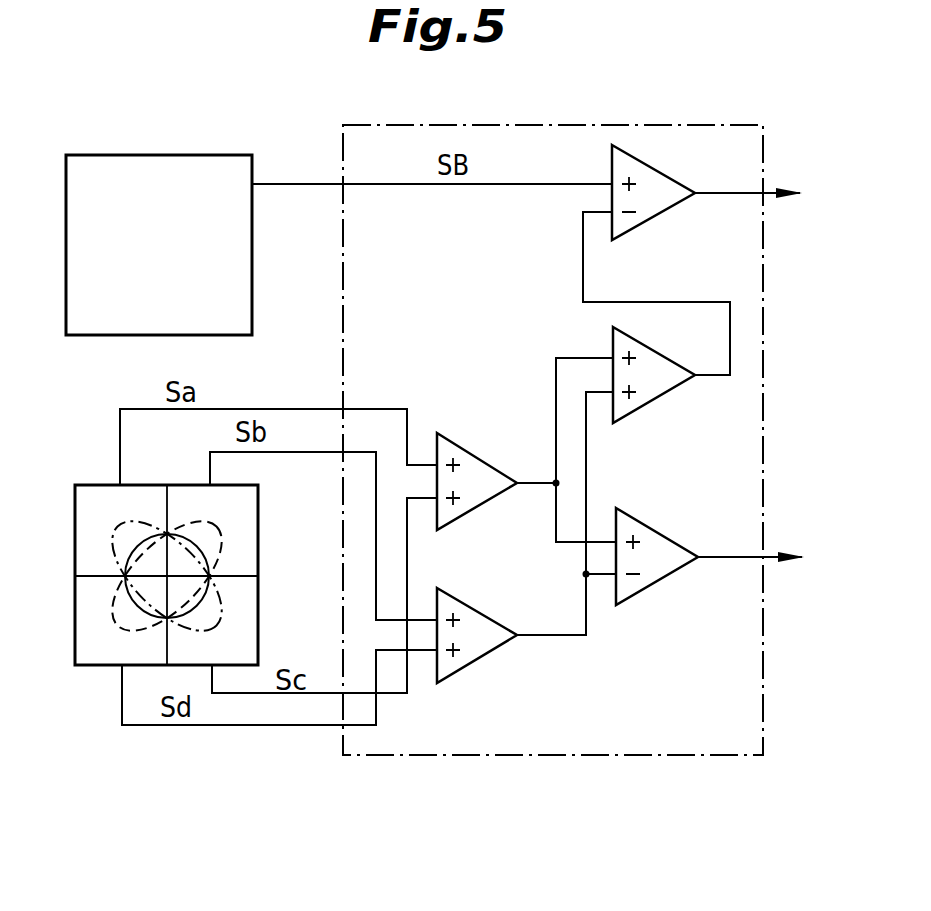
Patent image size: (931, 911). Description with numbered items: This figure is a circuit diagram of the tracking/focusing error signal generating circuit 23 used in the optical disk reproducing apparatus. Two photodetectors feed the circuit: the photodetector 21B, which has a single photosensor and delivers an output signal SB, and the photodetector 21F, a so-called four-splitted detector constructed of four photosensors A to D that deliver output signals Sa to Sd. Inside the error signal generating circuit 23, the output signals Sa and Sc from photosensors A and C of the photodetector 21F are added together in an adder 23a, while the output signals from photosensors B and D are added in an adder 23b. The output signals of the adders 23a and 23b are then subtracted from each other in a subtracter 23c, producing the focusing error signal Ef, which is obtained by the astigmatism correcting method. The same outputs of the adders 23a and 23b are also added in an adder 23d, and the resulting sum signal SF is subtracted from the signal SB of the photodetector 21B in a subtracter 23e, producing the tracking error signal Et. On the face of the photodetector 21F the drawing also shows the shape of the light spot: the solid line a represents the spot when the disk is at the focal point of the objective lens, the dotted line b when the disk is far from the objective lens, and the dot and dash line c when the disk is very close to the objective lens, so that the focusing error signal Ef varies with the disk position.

The photodetector 21B is at (170, 160).
The photodetector 21F is at (159, 639).
The tracking/focusing error signal generating circuit 23 is at (400, 755).
The adder 23a is at (485, 507).
The adder 23b is at (491, 657).
The subtracter 23c is at (673, 580).
The adder 23d is at (669, 397).
The subtracter 23e is at (659, 217).
The light spot shape (solid line) a is at (197, 538).
The light spot shape (dotted line) b is at (217, 548).
The light spot shape (dot and dash line) c is at (220, 612).